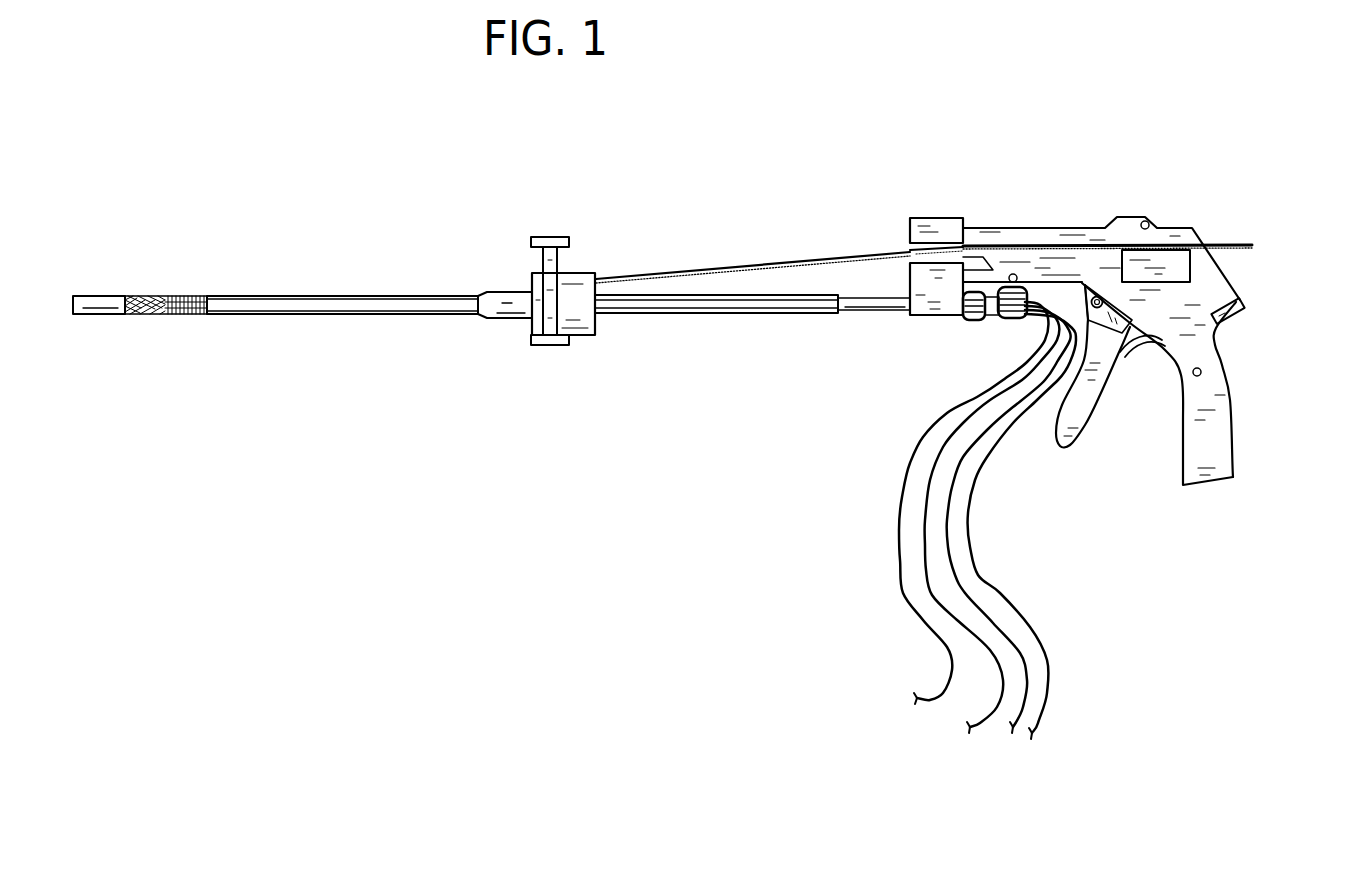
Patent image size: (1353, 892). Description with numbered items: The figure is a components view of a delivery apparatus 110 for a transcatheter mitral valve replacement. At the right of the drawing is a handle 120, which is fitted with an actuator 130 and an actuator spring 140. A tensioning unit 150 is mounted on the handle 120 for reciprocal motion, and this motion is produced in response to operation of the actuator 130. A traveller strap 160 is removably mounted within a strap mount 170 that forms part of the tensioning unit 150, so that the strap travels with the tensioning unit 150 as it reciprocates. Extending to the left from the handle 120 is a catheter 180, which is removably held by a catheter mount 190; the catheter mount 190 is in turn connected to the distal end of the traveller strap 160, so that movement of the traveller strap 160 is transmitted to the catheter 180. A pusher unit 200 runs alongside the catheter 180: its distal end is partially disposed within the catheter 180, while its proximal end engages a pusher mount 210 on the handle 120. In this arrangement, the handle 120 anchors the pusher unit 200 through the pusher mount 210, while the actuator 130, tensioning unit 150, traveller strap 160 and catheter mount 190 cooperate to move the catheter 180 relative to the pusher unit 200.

The delivery apparatus 110 is at (397, 166).
The handle 120 is at (1122, 367).
The actuator 130 is at (1084, 395).
The actuator spring 140 is at (1151, 375).
The tensioning unit 150 is at (1132, 224).
The traveller strap 160 is at (753, 251).
The strap mount 170 is at (944, 242).
The catheter 180 is at (302, 285).
The catheter mount 190 is at (552, 319).
The pusher unit 200 is at (752, 327).
The pusher mount 210 is at (986, 513).